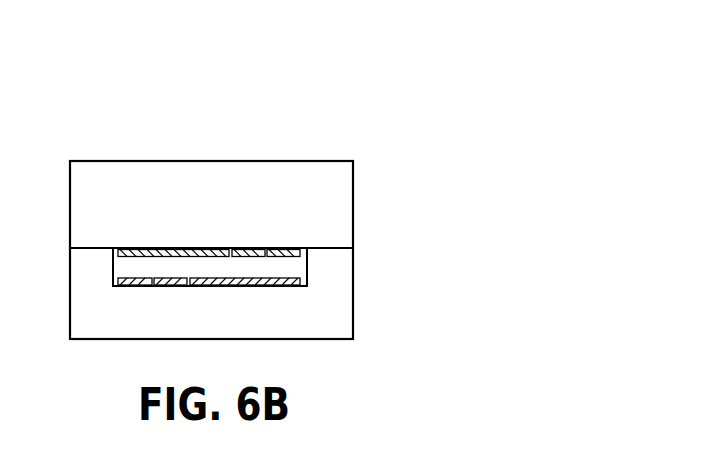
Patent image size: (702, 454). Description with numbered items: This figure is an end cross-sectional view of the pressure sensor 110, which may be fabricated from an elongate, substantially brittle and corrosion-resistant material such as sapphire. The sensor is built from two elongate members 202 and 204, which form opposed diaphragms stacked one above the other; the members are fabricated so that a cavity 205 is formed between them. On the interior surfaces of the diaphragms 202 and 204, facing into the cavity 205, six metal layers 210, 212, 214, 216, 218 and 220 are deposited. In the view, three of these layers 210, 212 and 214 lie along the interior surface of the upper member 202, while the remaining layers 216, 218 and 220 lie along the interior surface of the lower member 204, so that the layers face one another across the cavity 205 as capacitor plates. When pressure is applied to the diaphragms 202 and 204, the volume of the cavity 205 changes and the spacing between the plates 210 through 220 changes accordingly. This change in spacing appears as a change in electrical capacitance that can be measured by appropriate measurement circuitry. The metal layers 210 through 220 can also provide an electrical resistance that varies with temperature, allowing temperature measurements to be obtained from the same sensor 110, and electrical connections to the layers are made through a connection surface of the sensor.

The pressure sensor 110 is at (288, 122).
The elongate member 202 is at (337, 160).
The elongate member 204 is at (353, 303).
The cavity 205 is at (293, 266).
The metal layer 210 is at (163, 248).
The metal layer 212 is at (243, 248).
The metal layer 214 is at (287, 248).
The metal layer 216 is at (130, 286).
The metal layer 218 is at (172, 286).
The metal layer 220 is at (260, 286).